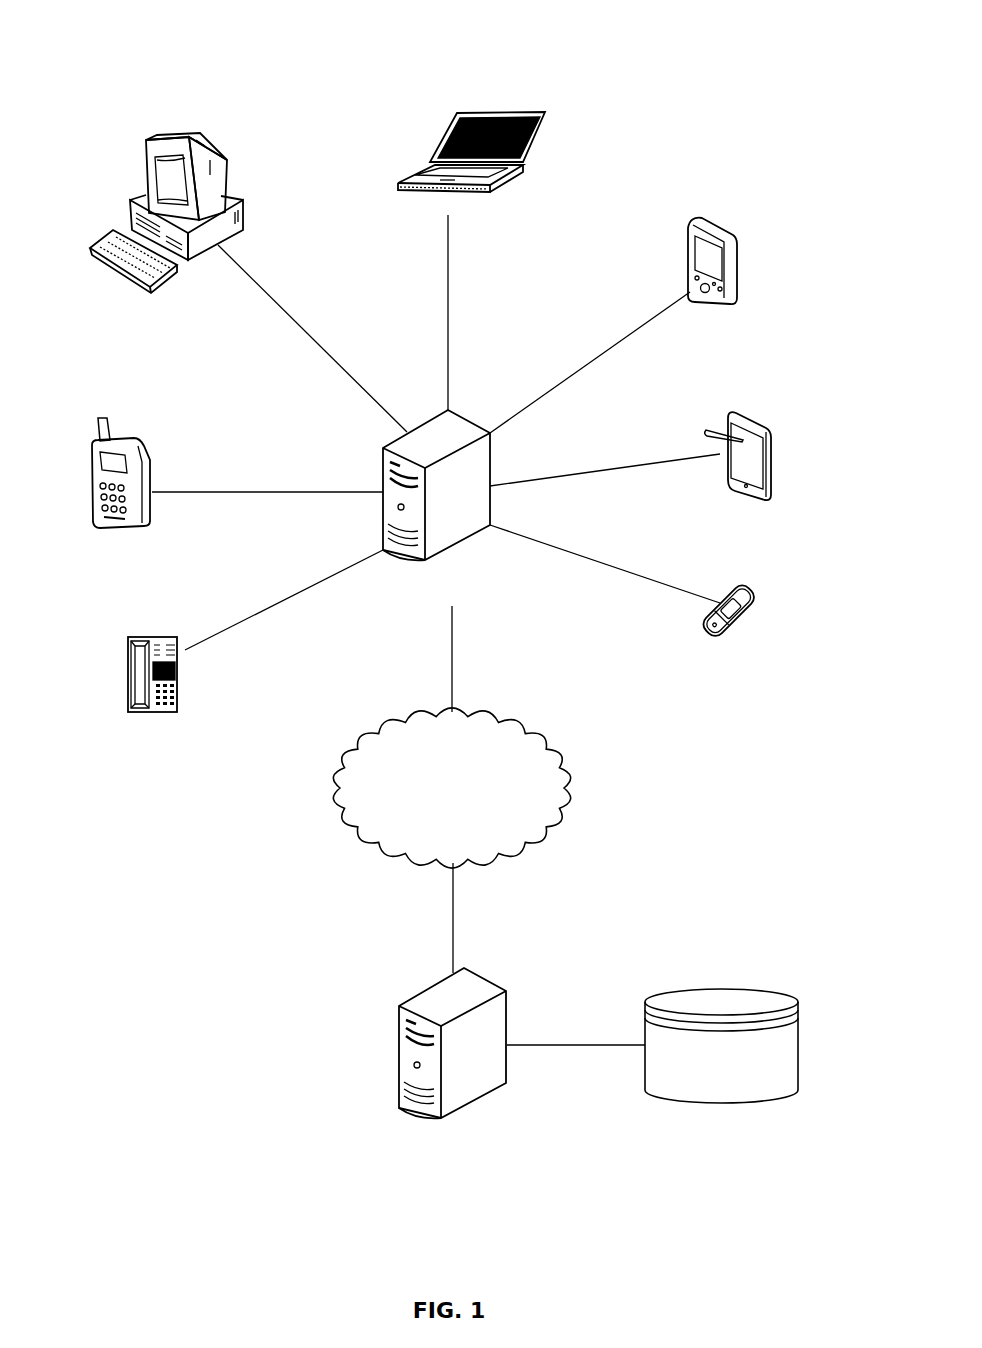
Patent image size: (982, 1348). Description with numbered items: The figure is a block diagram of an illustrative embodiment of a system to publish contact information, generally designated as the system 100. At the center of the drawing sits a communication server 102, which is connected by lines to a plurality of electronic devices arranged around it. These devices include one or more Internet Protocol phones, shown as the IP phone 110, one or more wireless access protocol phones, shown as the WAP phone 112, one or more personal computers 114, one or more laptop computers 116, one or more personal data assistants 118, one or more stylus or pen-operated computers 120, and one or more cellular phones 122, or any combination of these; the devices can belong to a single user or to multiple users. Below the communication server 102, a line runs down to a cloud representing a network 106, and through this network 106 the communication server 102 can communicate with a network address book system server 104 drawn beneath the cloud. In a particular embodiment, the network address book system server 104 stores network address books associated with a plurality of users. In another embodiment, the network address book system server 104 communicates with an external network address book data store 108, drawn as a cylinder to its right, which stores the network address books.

The system 100 is at (306, 76).
The communication server 102 is at (468, 418).
The network address book system server 104 is at (478, 975).
The network 106 is at (512, 723).
The network address book data store 108 is at (723, 985).
The Internet Protocol (IP) phone 110 is at (155, 633).
The wireless access protocol (WAP) phone 112 is at (132, 440).
The personal computer 114 is at (196, 142).
The laptop computer 116 is at (502, 112).
The personal data assistant (PDA) 118 is at (713, 222).
The stylus or pen-operated computer 120 is at (758, 420).
The cellular phone 122 is at (750, 595).